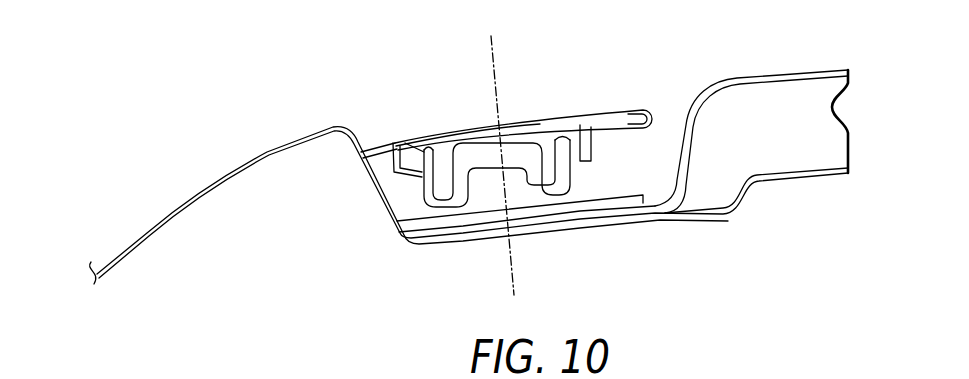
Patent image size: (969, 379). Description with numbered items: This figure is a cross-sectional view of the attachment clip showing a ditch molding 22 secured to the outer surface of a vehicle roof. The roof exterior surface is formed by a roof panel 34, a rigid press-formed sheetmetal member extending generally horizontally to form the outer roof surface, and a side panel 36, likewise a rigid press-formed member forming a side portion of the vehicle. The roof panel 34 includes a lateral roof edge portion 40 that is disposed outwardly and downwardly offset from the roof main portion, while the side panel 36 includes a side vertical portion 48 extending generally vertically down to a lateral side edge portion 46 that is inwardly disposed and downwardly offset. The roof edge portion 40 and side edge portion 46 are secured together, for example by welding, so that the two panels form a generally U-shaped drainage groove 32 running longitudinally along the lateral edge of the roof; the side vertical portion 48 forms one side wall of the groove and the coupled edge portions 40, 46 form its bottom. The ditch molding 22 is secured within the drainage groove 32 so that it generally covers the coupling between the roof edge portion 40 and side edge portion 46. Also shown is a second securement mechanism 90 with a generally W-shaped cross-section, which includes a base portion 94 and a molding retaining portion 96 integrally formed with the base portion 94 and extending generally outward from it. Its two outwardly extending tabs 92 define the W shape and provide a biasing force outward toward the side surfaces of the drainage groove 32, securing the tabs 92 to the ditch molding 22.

The ditch molding 22 is at (473, 120).
The drainage groove 32 is at (661, 177).
The roof panel 34 is at (828, 72).
The side panel 36 is at (215, 180).
The lateral roof edge portion 40 is at (592, 126).
The lateral side edge portion 46 is at (545, 232).
The side vertical portion 48 is at (372, 184).
The second securement mechanism 90 is at (513, 152).
The outwardly extending tabs 92 is at (405, 141).
The base portion 94 is at (505, 152).
The molding retaining portion 96 is at (412, 200).